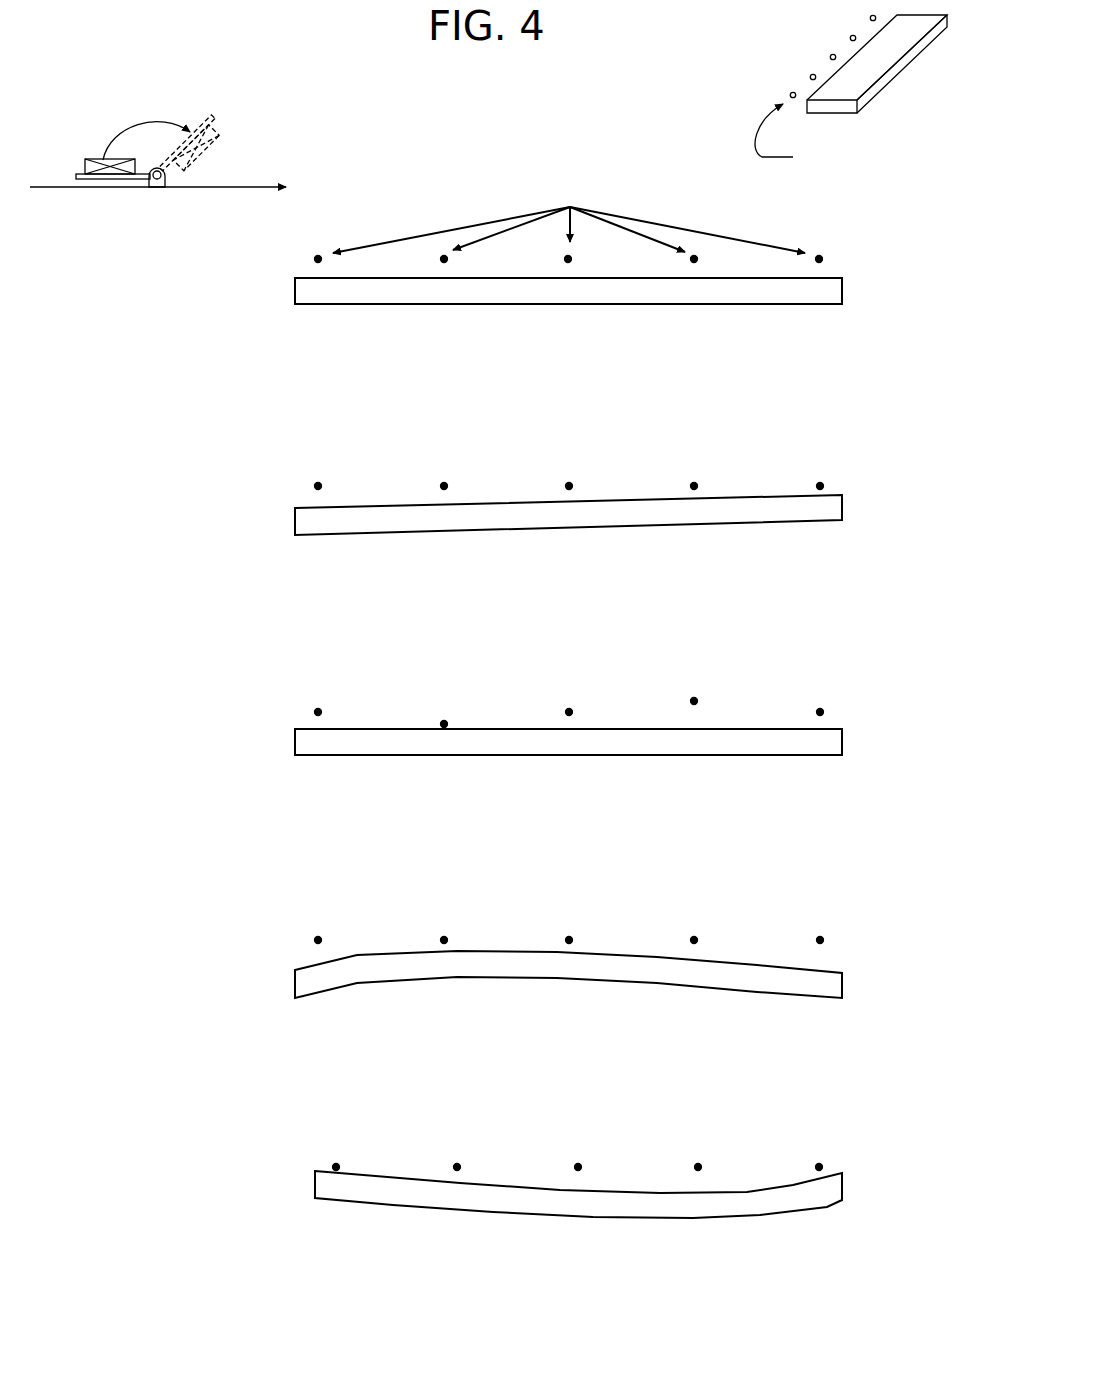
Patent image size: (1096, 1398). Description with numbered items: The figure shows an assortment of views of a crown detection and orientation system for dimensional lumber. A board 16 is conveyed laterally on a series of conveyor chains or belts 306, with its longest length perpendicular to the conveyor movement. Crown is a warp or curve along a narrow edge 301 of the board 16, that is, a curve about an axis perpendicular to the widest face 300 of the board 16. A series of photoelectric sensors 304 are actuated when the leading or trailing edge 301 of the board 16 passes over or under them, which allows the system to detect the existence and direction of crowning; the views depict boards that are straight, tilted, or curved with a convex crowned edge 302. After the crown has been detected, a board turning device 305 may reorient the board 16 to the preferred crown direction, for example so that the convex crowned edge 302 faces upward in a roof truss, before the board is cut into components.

The board 16 is at (100, 158).
The widest face 300 is at (860, 78).
The narrow edge 301 is at (913, 53).
The convex crowned edge 302 is at (377, 952).
The photoelectric sensors 304 is at (892, 259).
The board turning device 305 is at (203, 128).
The conveyor chains or belts 306 is at (60, 186).